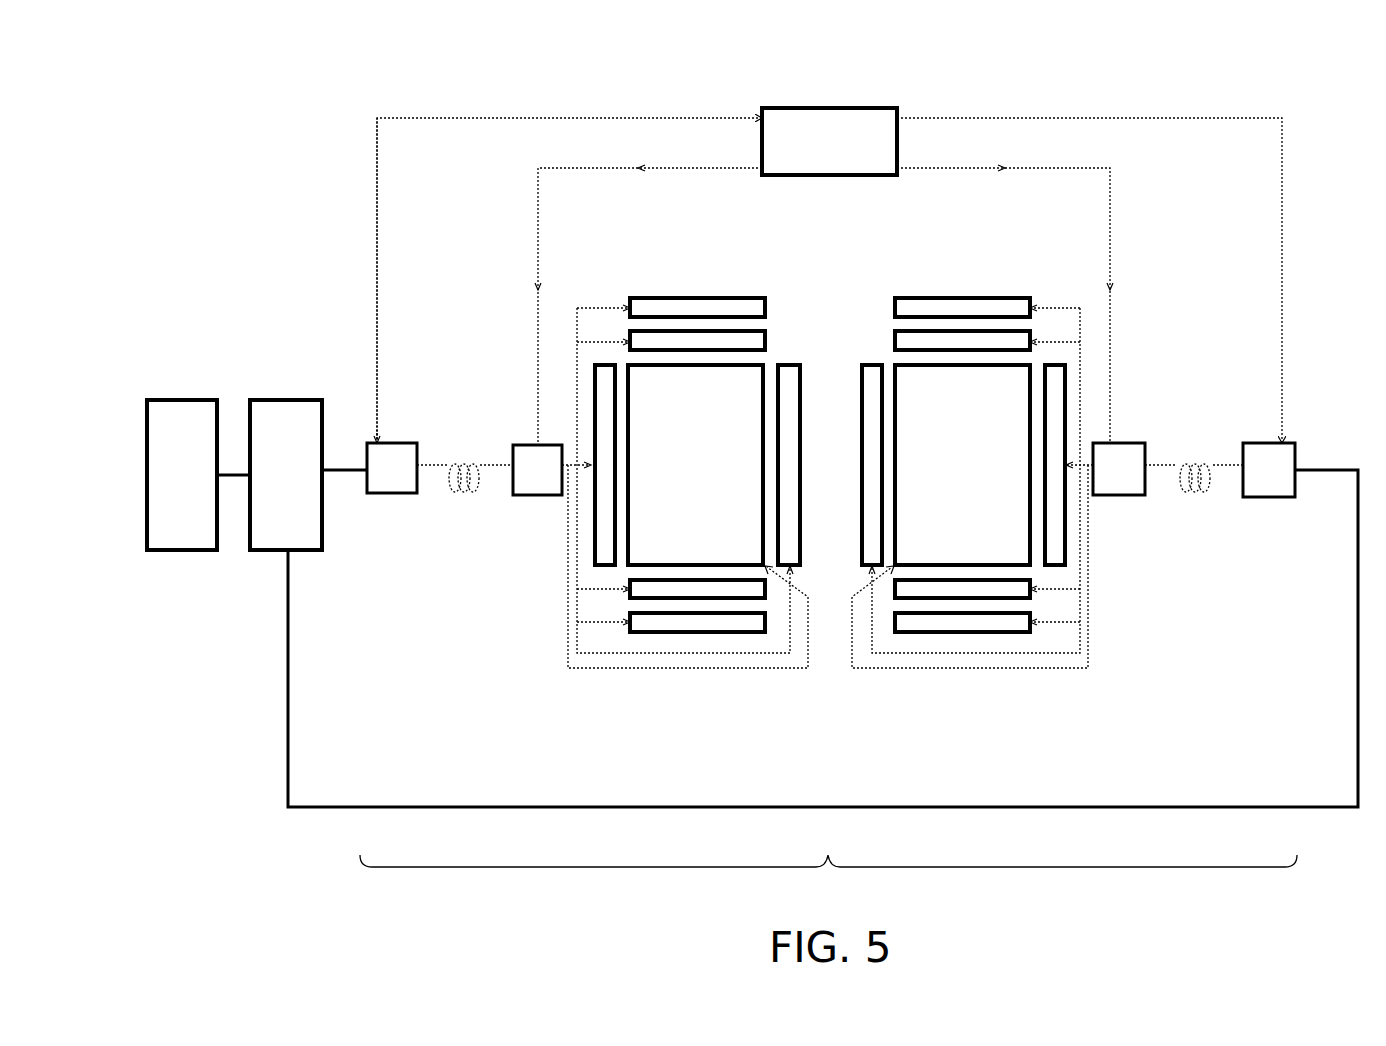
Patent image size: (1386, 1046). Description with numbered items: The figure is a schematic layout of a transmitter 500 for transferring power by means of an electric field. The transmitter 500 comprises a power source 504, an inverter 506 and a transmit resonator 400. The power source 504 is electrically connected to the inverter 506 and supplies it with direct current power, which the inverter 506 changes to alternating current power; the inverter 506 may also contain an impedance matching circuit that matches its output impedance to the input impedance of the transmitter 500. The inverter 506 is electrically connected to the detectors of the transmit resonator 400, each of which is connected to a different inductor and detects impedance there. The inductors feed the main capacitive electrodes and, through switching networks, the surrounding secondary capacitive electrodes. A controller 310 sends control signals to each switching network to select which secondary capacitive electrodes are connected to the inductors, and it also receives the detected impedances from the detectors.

The transmitter 500 is at (752, 476).
The transmit resonator 400 is at (823, 691).
The controller 310 is at (837, 104).
The power source 504 is at (190, 400).
The inverter 506 is at (297, 400).